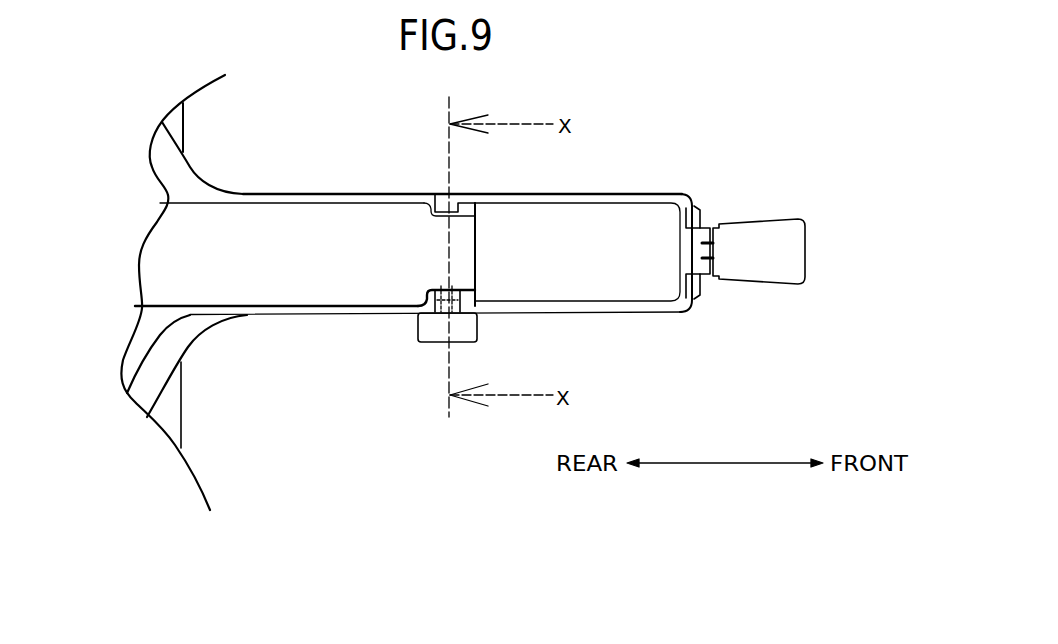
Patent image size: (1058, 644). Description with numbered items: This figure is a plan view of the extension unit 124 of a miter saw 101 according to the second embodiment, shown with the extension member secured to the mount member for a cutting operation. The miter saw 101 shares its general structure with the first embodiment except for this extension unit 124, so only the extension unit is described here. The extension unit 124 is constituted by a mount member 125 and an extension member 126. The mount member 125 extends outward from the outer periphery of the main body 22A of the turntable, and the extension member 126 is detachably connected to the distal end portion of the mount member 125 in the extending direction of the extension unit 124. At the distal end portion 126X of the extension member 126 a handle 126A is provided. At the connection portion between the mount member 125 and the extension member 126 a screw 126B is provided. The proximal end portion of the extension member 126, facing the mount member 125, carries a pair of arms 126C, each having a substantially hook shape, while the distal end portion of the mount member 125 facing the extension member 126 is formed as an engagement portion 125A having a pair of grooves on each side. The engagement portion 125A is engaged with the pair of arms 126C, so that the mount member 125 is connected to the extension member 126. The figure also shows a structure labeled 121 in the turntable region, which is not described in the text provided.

The main body 22A is at (160, 145).
The miter saw 101 is at (472, 319).
The lever base 121 is at (165, 411).
The extension unit 124 is at (380, 192).
The mount member 125 is at (330, 193).
The engagement portion 125A is at (453, 250).
The extension member 126 is at (620, 192).
The handle 126A is at (755, 270).
The screw 126B is at (432, 341).
The arms 126C is at (453, 203).
The distal end portion 126X is at (702, 218).